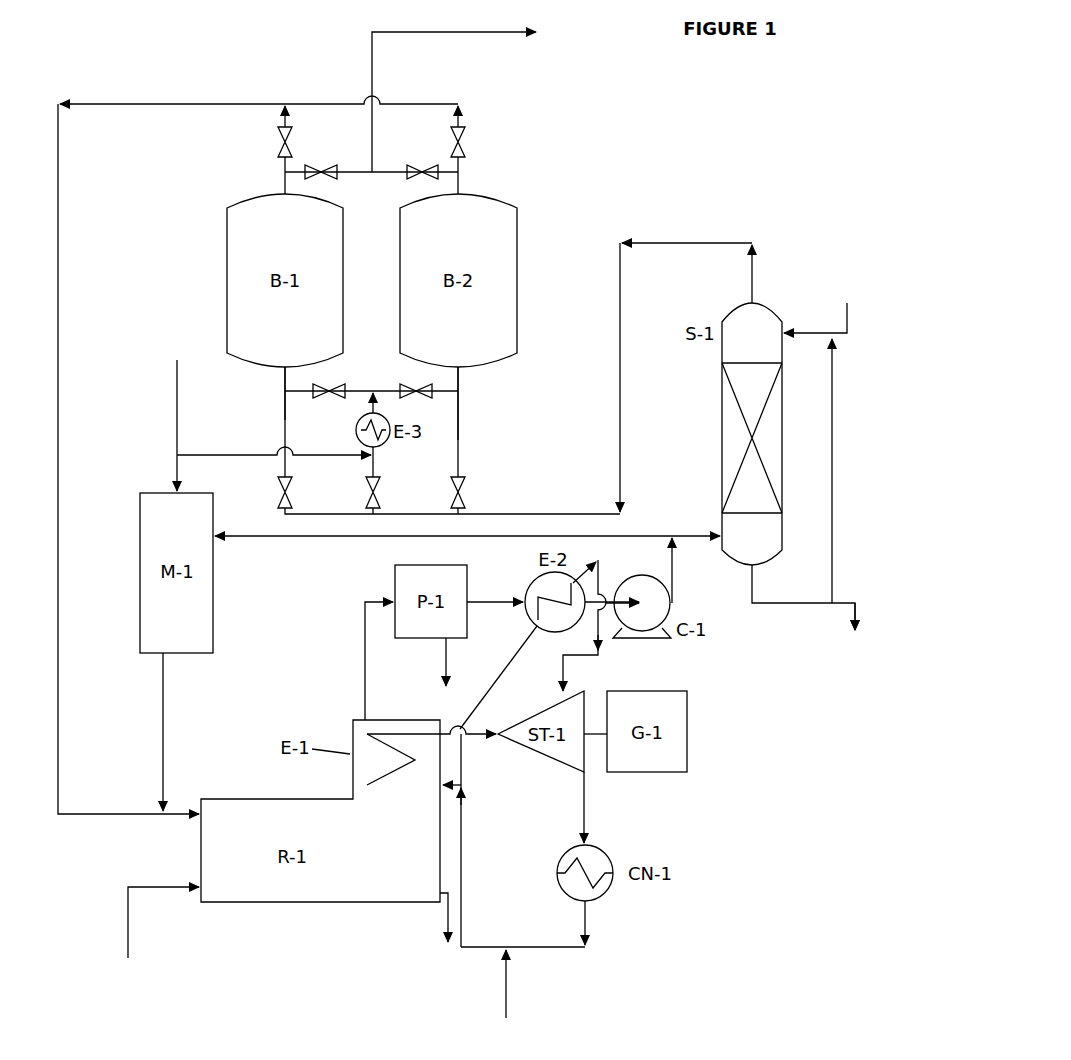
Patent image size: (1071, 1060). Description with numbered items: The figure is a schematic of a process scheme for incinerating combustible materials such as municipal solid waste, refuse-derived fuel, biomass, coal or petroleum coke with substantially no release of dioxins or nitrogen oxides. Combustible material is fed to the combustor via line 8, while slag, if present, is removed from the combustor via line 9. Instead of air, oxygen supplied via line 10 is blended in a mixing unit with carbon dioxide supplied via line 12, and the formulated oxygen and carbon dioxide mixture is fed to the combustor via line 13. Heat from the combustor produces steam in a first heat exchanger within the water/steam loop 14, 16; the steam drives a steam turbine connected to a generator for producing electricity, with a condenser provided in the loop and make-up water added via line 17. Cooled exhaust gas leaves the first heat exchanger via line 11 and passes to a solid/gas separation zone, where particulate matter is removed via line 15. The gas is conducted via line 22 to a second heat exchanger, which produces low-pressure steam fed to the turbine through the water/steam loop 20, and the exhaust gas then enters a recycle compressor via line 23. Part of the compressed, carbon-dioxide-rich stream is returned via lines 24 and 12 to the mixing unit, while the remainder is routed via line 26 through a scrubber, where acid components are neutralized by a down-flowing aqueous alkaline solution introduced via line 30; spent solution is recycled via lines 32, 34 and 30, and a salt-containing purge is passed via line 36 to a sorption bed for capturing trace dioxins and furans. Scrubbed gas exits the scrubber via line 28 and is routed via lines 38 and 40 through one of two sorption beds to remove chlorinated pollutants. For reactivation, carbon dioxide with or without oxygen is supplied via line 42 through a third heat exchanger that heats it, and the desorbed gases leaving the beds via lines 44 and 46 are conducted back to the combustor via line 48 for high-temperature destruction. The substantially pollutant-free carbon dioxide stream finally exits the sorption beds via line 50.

The line 8 is at (138, 897).
The line 9 is at (438, 920).
The line 10 is at (173, 418).
The line 11 is at (357, 674).
The line 12 is at (276, 548).
The line 13 is at (170, 733).
The water/steam loop 14 is at (479, 940).
The line 15 is at (437, 658).
The water/steam loop 16 is at (403, 796).
The line 17 is at (515, 975).
The water/steam loop 20 is at (556, 671).
The line 22 is at (495, 589).
The line 23 is at (605, 583).
The line 24 is at (682, 565).
The line 26 is at (680, 518).
The line 28 is at (654, 241).
The line 30 is at (815, 328).
The line 32 is at (772, 605).
The line 34 is at (842, 473).
The line 36 is at (860, 613).
The line 38 is at (467, 421).
The line 40 is at (291, 408).
The line 42 is at (237, 452).
The line 44 is at (468, 142).
The line 46 is at (272, 137).
The line 48 is at (188, 98).
The line 50 is at (455, 42).